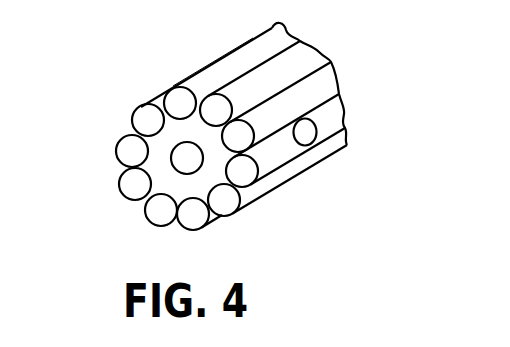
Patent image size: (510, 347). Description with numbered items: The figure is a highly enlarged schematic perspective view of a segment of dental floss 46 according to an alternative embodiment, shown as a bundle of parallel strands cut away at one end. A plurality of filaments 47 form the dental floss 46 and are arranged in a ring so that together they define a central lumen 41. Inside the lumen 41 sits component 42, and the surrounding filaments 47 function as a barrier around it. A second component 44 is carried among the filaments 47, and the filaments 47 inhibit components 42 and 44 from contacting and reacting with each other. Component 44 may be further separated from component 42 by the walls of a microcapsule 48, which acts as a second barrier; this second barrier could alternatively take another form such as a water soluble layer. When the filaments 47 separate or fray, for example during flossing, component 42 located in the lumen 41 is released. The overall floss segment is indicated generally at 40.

The tube bundle assembly 40 is at (150, 80).
The lumen 41 is at (164, 180).
The component 42 is at (188, 160).
The component 44 is at (308, 136).
The dental floss 46 is at (111, 167).
The filaments 47 is at (147, 125).
The microcapsule 48 is at (333, 118).